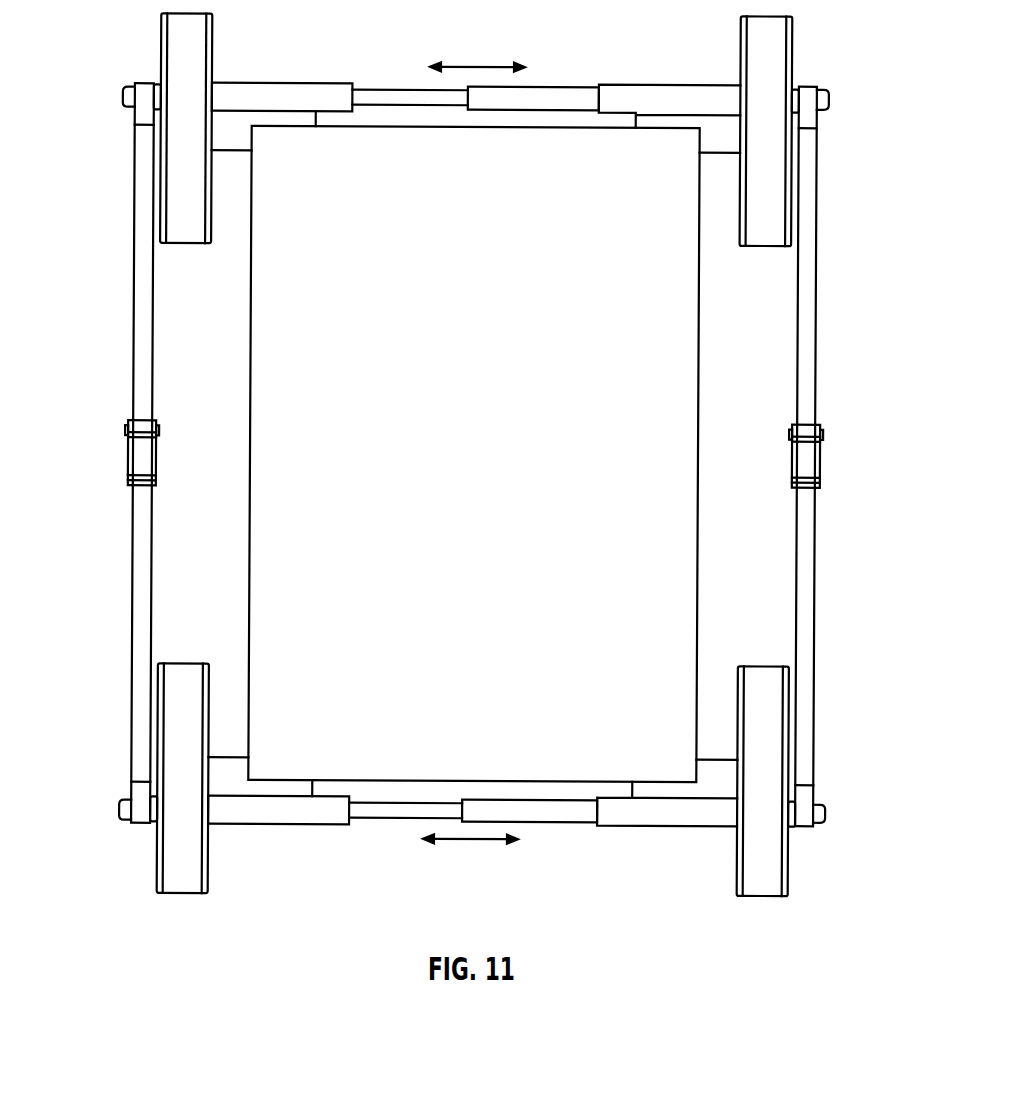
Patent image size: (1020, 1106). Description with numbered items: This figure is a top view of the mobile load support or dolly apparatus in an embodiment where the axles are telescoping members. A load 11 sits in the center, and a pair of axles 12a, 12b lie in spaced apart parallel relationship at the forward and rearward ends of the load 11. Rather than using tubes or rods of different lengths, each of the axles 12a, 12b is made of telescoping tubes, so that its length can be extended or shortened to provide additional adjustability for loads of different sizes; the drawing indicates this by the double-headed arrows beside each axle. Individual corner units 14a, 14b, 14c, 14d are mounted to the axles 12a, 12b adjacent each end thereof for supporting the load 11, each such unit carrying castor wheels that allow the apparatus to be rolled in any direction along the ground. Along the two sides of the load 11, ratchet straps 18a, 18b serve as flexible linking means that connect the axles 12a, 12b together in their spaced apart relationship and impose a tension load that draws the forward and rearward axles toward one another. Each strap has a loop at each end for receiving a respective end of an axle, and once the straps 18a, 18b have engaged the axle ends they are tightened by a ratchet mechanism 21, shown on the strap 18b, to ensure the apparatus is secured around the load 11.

The load 11 is at (490, 466).
The axle 12a is at (547, 88).
The axle 12b is at (547, 824).
The corner unit 14a is at (141, 41).
The corner unit 14b is at (817, 51).
The corner unit 14c is at (804, 872).
The corner unit 14d is at (140, 864).
The ratchet strap 18a is at (132, 398).
The ratchet strap 18b is at (816, 393).
The ratchet mechanism 21 is at (807, 461).